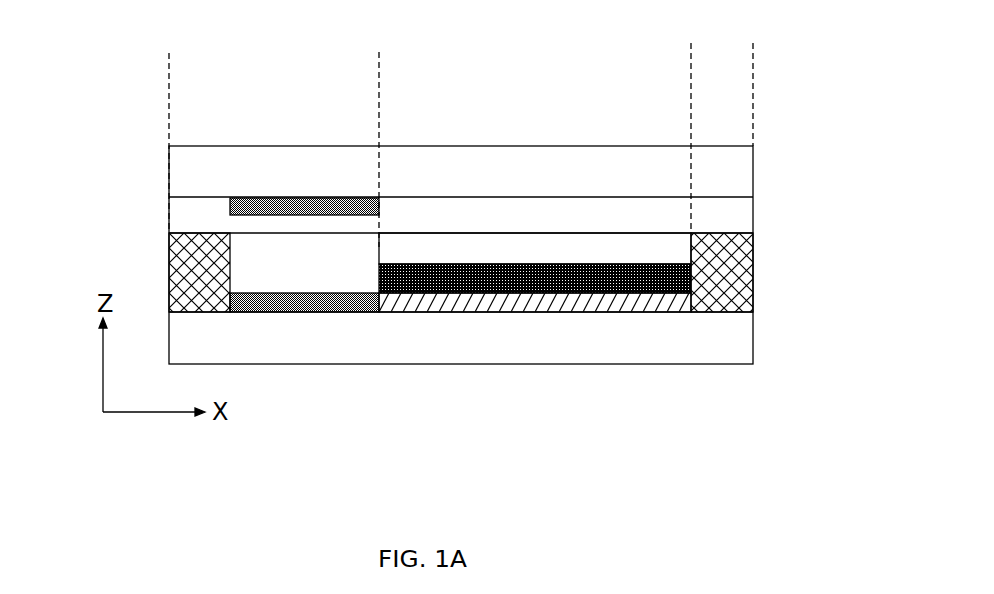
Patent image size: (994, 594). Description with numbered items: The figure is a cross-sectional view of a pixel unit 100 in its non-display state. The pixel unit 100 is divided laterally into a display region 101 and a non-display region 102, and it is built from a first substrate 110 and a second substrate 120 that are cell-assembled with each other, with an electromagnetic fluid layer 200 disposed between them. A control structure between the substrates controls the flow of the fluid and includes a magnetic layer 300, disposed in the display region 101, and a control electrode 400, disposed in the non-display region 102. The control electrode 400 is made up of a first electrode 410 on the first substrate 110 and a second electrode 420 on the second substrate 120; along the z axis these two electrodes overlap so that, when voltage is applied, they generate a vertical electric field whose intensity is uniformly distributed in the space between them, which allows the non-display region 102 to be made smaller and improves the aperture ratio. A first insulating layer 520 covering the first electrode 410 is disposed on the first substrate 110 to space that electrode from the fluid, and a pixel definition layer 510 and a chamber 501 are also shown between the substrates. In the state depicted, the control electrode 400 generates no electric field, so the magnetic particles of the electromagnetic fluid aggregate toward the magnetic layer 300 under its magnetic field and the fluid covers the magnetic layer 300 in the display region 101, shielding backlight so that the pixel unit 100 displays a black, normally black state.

The pixel unit 100 is at (438, 474).
The display region 101 is at (683, 79).
The non-display region 102 is at (371, 66).
The first substrate 110 is at (412, 182).
The second substrate 120 is at (352, 340).
The electromagnetic fluid layer 200 is at (538, 285).
The magnetic layer 300 is at (436, 298).
The control electrode 400 is at (80, 92).
The first electrode 410 is at (258, 204).
The second electrode 420 is at (303, 300).
The chamber 501 is at (505, 247).
The pixel definition layer 510 is at (197, 279).
The first insulating layer 520 is at (742, 222).